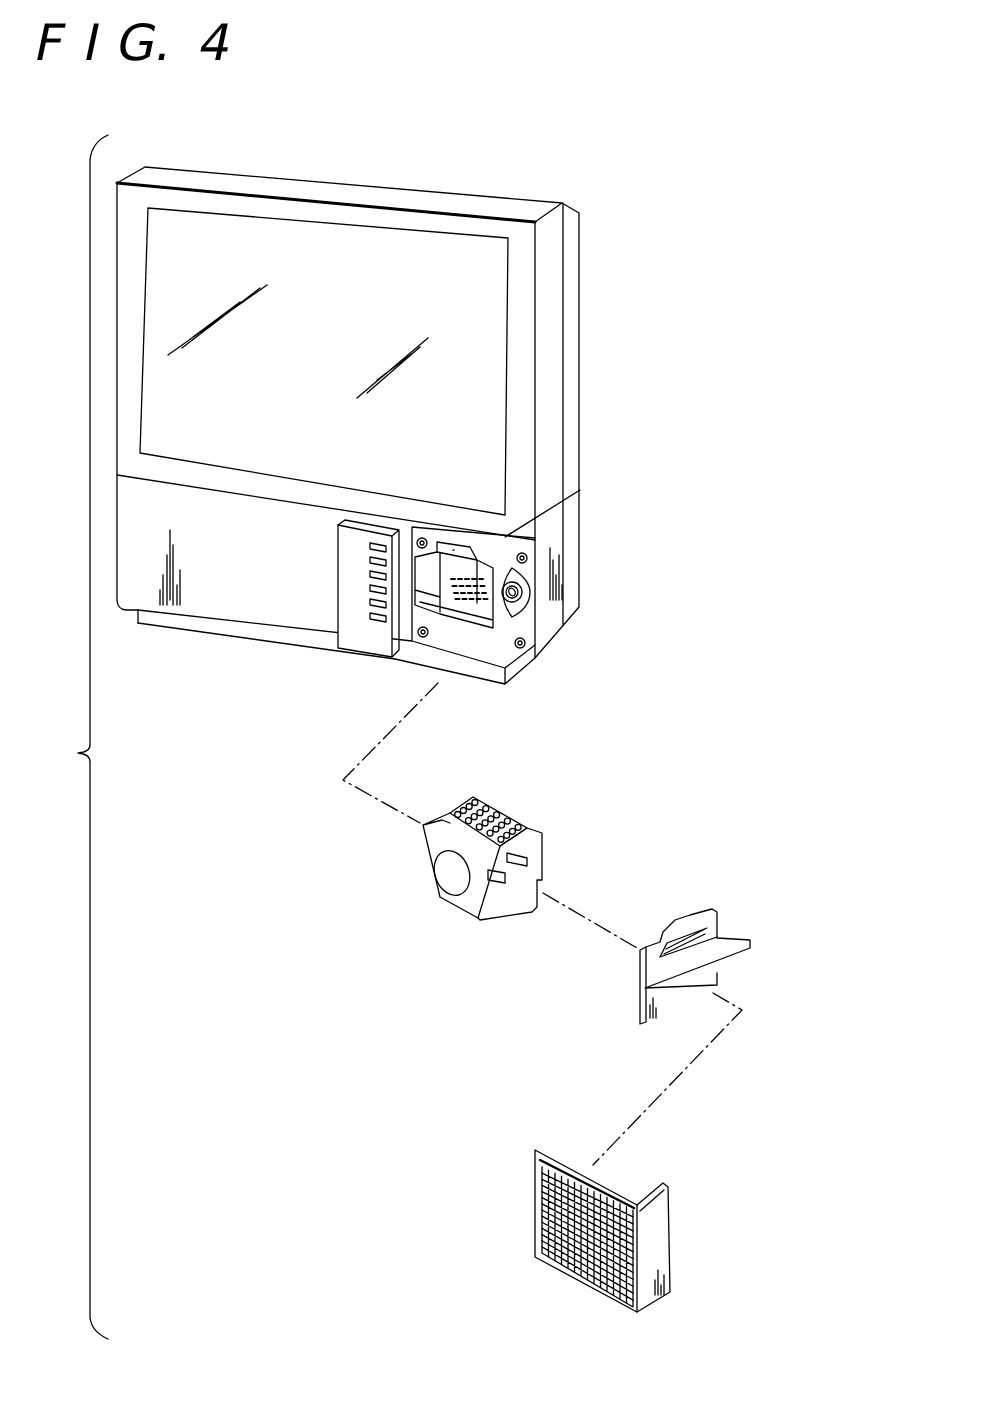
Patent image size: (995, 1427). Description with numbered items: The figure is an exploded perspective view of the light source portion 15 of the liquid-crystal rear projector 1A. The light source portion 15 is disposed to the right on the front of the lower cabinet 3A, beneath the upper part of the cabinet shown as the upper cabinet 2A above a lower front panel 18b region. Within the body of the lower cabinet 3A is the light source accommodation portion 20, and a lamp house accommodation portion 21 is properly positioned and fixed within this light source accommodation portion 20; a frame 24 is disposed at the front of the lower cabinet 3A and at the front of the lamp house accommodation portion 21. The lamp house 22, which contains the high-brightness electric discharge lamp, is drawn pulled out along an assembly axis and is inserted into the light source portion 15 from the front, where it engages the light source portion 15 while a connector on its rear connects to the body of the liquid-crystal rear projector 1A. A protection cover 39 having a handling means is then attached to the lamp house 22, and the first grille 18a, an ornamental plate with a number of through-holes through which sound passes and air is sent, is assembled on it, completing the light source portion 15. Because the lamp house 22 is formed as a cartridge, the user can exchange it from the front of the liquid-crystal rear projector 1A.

The liquid-crystal rear projector 1A is at (628, 304).
The front cabinet 2A is at (554, 392).
The lower cabinet 3A is at (574, 566).
The light source portion 15 is at (403, 617).
The first grille 18a is at (517, 1228).
The lower front panel 18b is at (218, 605).
The light source accommodation portion 20 is at (460, 621).
The lamp house accommodation portion 21 is at (477, 566).
The lamp house 22 is at (542, 823).
The frame 24 is at (523, 621).
The protection cover 39 is at (750, 935).